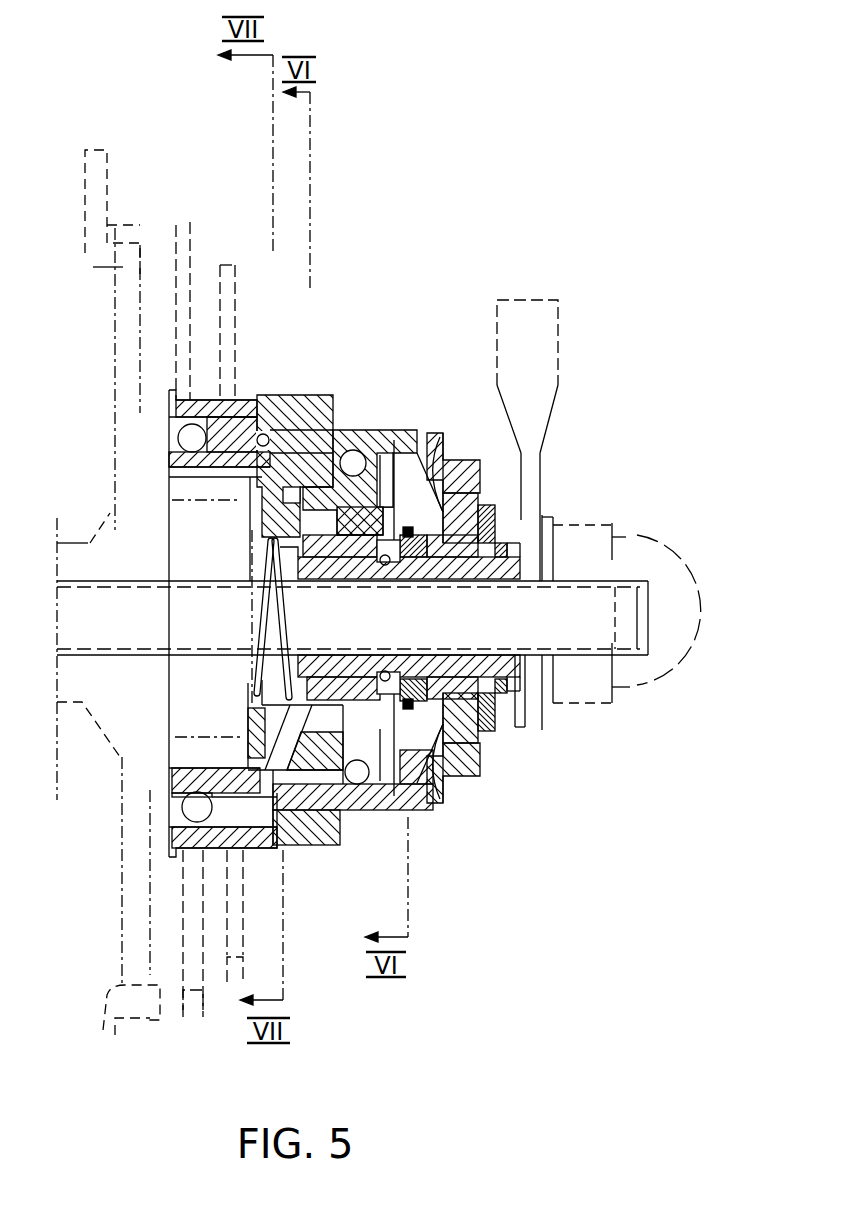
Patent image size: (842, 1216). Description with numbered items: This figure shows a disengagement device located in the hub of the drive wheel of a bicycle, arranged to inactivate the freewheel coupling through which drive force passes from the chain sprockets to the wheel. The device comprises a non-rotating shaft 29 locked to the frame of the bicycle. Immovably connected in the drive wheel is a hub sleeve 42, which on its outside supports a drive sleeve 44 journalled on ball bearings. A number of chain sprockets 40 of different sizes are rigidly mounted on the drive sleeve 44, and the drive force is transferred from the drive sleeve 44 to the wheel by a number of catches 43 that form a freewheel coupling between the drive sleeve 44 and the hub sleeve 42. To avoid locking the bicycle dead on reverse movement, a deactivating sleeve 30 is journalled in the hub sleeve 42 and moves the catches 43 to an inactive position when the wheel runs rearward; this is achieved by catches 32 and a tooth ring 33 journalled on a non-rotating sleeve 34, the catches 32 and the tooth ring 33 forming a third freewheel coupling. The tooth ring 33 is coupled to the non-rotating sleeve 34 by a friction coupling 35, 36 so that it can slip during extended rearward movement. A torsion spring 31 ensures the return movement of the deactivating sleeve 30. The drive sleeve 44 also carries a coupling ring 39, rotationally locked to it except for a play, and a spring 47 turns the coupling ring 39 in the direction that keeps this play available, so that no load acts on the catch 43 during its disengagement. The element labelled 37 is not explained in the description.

The non-rotating shaft 29 is at (608, 600).
The deactivating sleeve 30 is at (394, 440).
The torsion spring 31 is at (257, 552).
The catches 32 is at (436, 440).
The tooth ring 33 is at (455, 493).
The non-rotating sleeve 34 is at (510, 660).
The friction coupling 35 is at (477, 498).
The friction coupling 36 is at (478, 524).
The snap ring 37 is at (494, 712).
The coupling ring 39 is at (338, 425).
The chain sprockets 40 is at (227, 265).
The hub sleeve 42 is at (174, 460).
The catches 43 is at (318, 452).
The drive sleeve 44 is at (169, 409).
The spring 47 is at (262, 434).